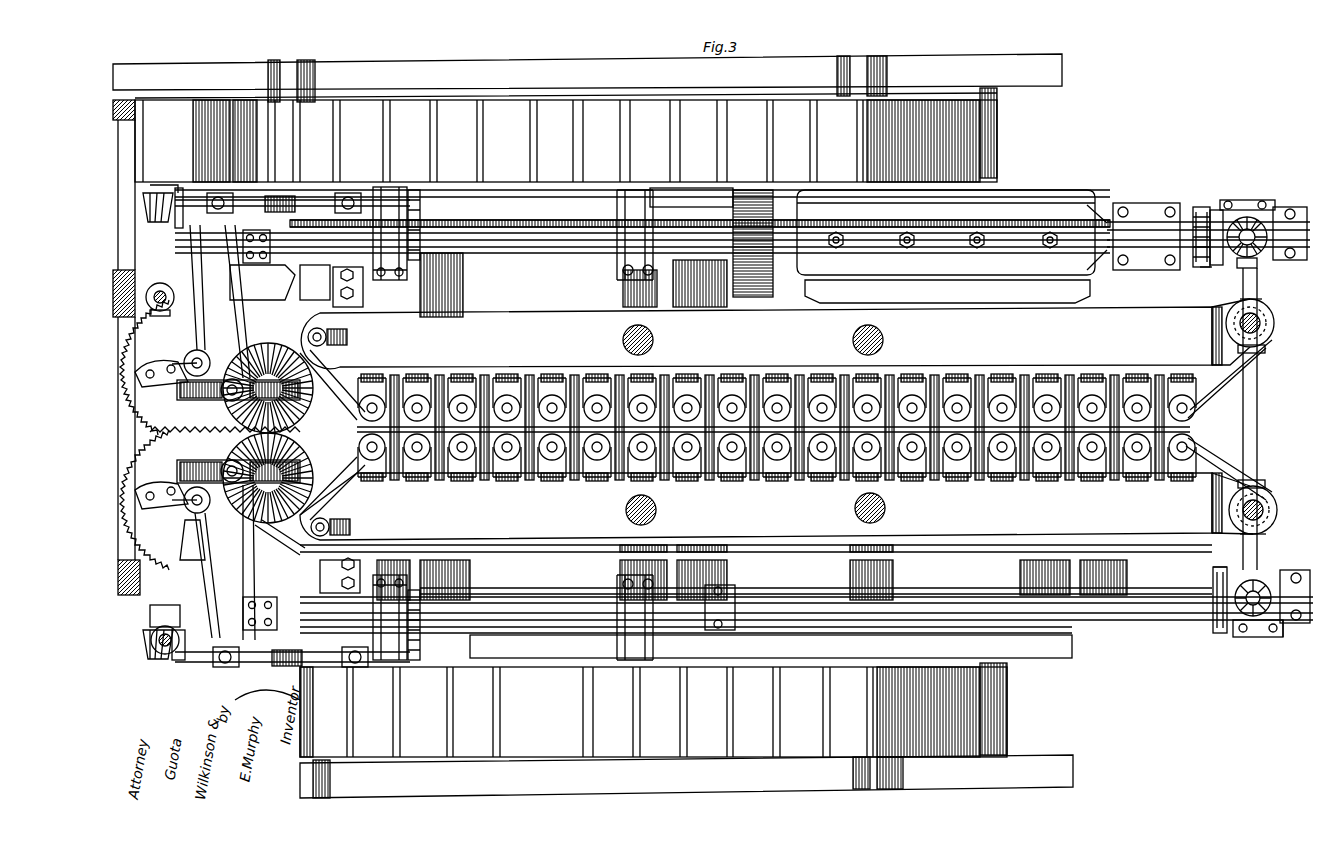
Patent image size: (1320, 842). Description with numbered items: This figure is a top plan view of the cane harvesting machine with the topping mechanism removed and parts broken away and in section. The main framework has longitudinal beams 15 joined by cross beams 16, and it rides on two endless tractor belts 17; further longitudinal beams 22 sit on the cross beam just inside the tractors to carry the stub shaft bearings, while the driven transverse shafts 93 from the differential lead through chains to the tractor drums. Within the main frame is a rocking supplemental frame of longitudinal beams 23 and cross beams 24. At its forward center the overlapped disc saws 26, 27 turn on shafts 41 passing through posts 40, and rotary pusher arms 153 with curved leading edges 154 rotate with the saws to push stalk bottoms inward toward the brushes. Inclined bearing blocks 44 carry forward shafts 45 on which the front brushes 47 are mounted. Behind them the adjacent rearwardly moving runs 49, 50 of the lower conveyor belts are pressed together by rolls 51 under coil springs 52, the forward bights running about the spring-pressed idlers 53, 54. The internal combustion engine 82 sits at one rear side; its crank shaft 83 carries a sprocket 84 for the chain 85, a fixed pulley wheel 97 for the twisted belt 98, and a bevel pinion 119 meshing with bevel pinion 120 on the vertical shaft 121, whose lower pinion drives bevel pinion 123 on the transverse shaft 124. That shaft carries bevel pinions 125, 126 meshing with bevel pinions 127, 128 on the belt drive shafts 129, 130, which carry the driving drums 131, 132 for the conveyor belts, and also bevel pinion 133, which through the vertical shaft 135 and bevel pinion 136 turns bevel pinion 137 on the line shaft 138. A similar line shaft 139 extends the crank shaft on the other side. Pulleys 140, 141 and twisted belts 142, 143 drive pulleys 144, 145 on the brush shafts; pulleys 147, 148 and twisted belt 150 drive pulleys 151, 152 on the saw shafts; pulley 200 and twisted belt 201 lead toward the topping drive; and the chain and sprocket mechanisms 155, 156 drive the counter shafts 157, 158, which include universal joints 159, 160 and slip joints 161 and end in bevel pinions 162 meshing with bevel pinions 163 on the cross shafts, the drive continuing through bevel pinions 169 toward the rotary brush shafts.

The longitudinal beams 15 is at (593, 426).
The cross beams 16 is at (465, 300).
The endless tractor belts 17 is at (571, 422).
The longitudinal beams 22 is at (771, 423).
The longitudinal beams 23 is at (610, 275).
The cross beams 24 is at (535, 565).
The rotary saw 26 is at (144, 500).
The rotary saw 27 is at (210, 368).
The posts 40 is at (161, 366).
The shafts 41 is at (190, 368).
The bearing blocks 44 is at (345, 375).
The forward shaft 45 is at (245, 433).
The front brushes 47 is at (280, 537).
The rearwardly moving run 49 is at (486, 478).
The rearwardly moving run 50 is at (490, 375).
The pressure rolls 51 is at (585, 480).
The coil springs 52 is at (550, 480).
The spring-pressed idler 53 is at (352, 530).
The spring-pressed idler 54 is at (350, 348).
The internal combustion engine 82 is at (1053, 246).
The crank shaft 83 is at (1165, 208).
The sprocket 84 is at (1200, 207).
The chain 85 is at (1193, 210).
The driven transverse shafts 93 is at (772, 192).
The fixed pulley wheel 97 is at (1217, 265).
The twisted belt 98 is at (1202, 267).
The bevel pinion 119 is at (1240, 200).
The bevel pinion 120 is at (1250, 217).
The vertical shaft 121 is at (1290, 207).
The bevel pinion 123 is at (1258, 262).
The transverse shaft 124 is at (1258, 424).
The bevel pinion 125 is at (1255, 360).
The bevel pinion 126 is at (1258, 490).
The bevel pinion 127 is at (1226, 323).
The bevel pinion 128 is at (1229, 511).
The belt drive shaft 129 is at (1260, 300).
The belt drive shaft 130 is at (1238, 485).
The driving drum 131 is at (1265, 349).
The driving drum 132 is at (1266, 533).
The bevel pinion 133 is at (1294, 586).
The vertical shaft 135 is at (1258, 637).
The bevel pinion 136 is at (1283, 637).
The bevel pinion 137 is at (1240, 615).
The line shaft 138 is at (1160, 620).
The line shaft 139 is at (562, 255).
The pulley 140 is at (240, 600).
The pulley 141 is at (228, 215).
The twisted belt 142 is at (240, 560).
The twisted belt 143 is at (245, 263).
The pulley 144 is at (185, 488).
The pulley 145 is at (238, 390).
The pulley 147 is at (180, 660).
The pulley 148 is at (179, 188).
The twisted belt 150 is at (262, 283).
The pulley 151 is at (183, 524).
The pulley 152 is at (198, 373).
The rotary pusher arms 153 is at (161, 494).
The curved leading edges 154 is at (186, 508).
The chain and sprocket mechanism 155 is at (535, 592).
The chain and sprocket mechanism 156 is at (463, 283).
The counter shaft 157 is at (525, 660).
The counter shaft 158 is at (540, 190).
The universal joint 159 is at (350, 195).
The universal joint 160 is at (240, 664).
The slip joints 161 is at (290, 198).
The bevel pinions 162 is at (176, 190).
The bevel pinions 163 is at (168, 194).
The bevel pinions 169 is at (160, 312).
The pulley 200 is at (1213, 580).
The twisted belt 201 is at (1218, 567).